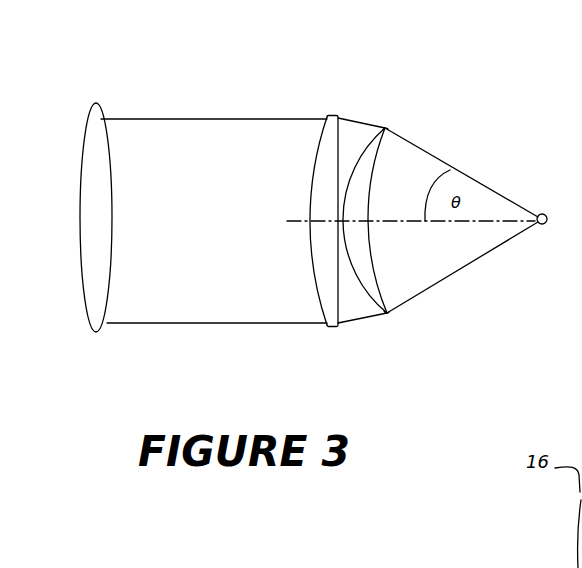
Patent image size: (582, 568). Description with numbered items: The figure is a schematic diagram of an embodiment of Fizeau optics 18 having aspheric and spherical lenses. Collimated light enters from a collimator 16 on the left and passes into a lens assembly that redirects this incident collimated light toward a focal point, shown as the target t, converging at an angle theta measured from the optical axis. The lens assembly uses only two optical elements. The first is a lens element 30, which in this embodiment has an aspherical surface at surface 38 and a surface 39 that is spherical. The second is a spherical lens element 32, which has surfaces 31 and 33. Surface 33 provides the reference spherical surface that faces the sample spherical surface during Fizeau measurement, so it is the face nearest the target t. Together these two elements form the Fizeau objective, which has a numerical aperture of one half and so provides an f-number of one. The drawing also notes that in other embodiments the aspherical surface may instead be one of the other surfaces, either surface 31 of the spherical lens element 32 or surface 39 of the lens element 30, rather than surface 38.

The collimator 16 is at (95, 104).
The Fizeau optics 18 is at (265, 23).
The lens element 30 is at (312, 230).
The surface 31 is at (418, 251).
The spherical lens element 32 is at (389, 314).
The surface 33 is at (375, 174).
The surface 38 is at (312, 253).
The surface 39 is at (338, 119).
The target t is at (541, 214).